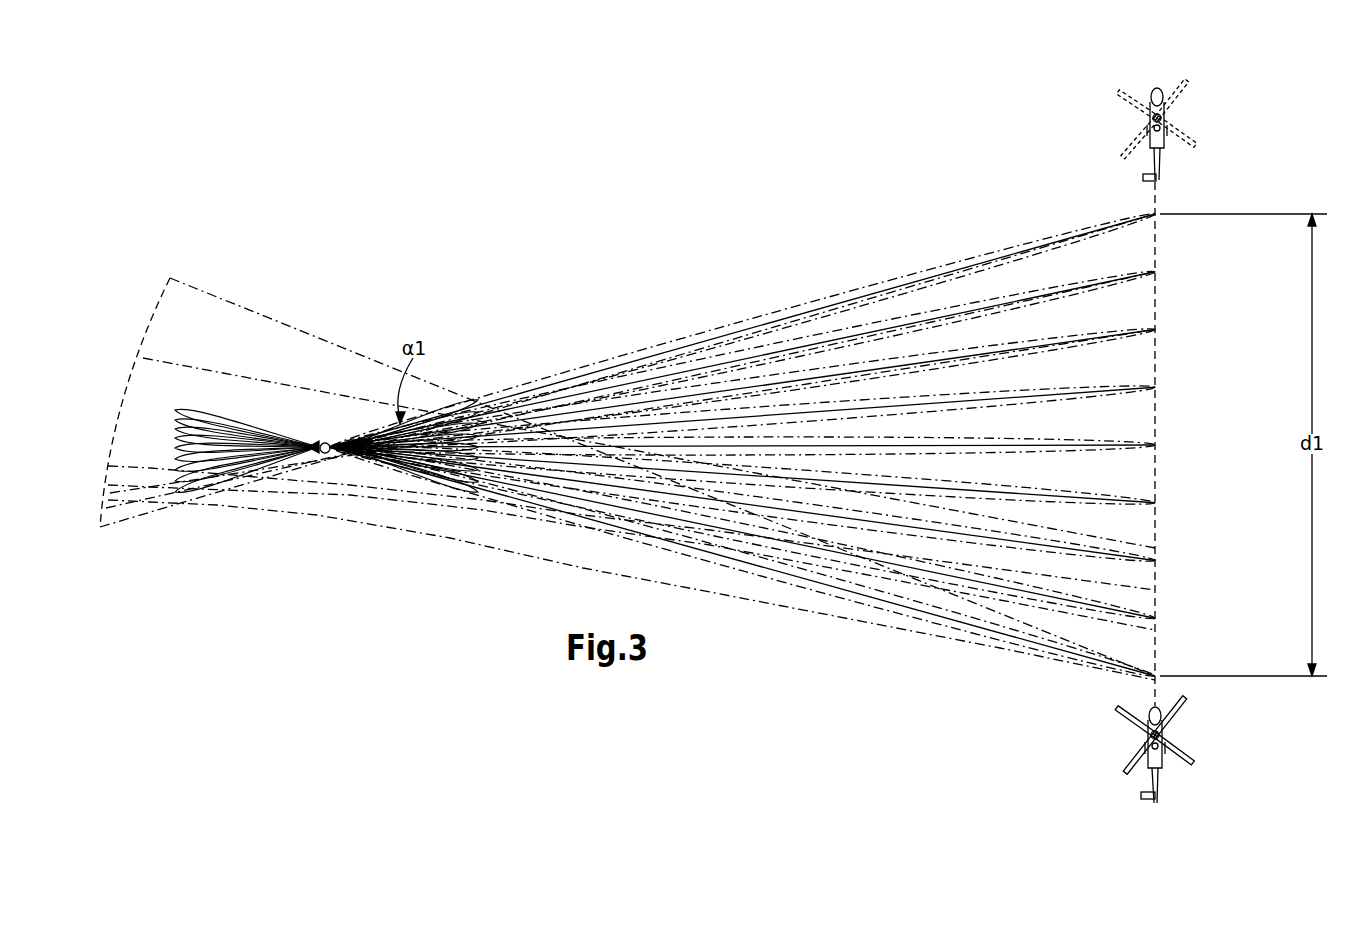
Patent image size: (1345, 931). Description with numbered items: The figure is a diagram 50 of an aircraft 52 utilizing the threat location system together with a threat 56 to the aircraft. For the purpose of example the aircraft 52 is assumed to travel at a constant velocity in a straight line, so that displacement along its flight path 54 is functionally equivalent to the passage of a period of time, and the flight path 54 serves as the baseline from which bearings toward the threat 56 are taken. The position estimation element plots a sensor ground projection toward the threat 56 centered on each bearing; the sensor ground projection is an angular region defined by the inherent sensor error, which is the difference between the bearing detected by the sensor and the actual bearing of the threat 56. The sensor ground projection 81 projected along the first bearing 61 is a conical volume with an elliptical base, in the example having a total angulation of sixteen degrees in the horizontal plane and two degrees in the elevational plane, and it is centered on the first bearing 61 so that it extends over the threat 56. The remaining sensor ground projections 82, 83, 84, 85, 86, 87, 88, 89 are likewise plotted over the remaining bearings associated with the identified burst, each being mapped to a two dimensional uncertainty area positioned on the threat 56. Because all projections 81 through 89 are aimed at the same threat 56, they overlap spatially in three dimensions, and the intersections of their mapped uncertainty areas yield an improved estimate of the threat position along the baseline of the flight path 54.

The diagram 50 is at (474, 212).
The aircraft 52 is at (1160, 745).
The flight path 54 is at (1160, 305).
The threat 56 is at (322, 456).
The first bearing 61 is at (918, 612).
The sensor ground projection 81 is at (1040, 655).
The sensor ground projection 82 is at (1046, 596).
The sensor ground projection 83 is at (1048, 546).
The sensor ground projection 84 is at (1050, 496).
The sensor ground projection 85 is at (1050, 445).
The sensor ground projection 86 is at (1052, 395).
The sensor ground projection 87 is at (1050, 344).
The sensor ground projection 88 is at (1050, 294).
The sensor ground projection 89 is at (1050, 244).